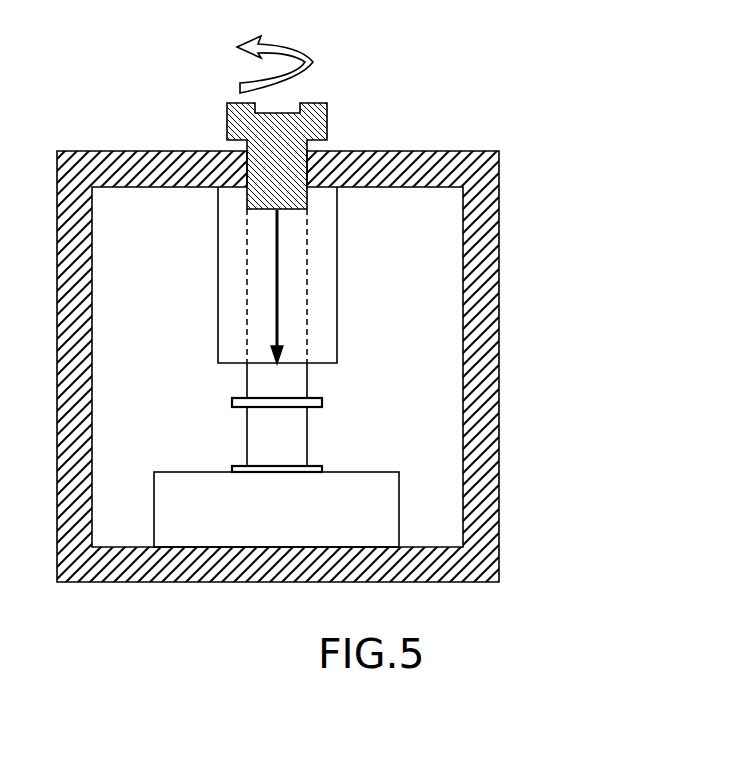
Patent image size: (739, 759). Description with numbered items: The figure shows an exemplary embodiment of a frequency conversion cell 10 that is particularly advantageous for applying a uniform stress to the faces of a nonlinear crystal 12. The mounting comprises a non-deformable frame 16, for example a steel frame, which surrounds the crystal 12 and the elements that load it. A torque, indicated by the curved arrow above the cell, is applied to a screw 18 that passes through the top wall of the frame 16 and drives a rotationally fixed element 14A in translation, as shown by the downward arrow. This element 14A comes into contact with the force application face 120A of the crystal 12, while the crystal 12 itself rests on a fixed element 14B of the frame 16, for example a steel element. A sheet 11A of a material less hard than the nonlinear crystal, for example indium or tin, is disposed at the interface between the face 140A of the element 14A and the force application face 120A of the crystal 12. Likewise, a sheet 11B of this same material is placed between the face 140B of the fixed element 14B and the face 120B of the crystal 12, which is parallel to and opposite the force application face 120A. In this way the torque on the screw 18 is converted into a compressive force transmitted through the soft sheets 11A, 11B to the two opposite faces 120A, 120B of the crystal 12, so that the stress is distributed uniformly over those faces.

The conversion cell 10 is at (567, 168).
The non-deformable frame 16 is at (490, 317).
The screw 18 is at (330, 127).
The rotationally fixed element 14A is at (298, 377).
The fixed element 14B is at (378, 517).
The crystal 12 is at (298, 437).
The sheet 11A is at (232, 403).
The sheet 11B is at (232, 468).
The force application face 120A is at (288, 408).
The face of the nonlinear crystal 120B is at (275, 466).
The face of the element 140A is at (273, 398).
The lower plate top surface 140B is at (258, 466).